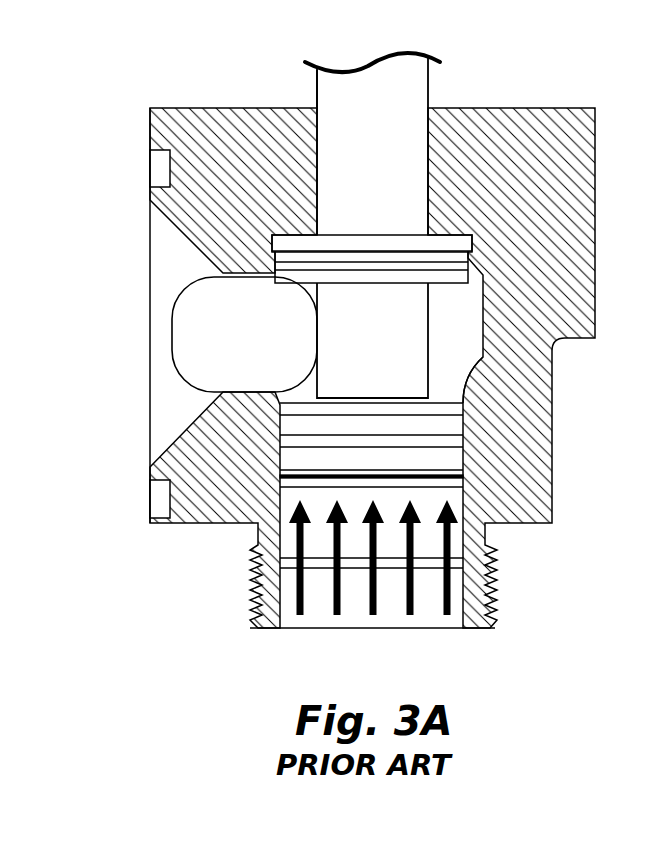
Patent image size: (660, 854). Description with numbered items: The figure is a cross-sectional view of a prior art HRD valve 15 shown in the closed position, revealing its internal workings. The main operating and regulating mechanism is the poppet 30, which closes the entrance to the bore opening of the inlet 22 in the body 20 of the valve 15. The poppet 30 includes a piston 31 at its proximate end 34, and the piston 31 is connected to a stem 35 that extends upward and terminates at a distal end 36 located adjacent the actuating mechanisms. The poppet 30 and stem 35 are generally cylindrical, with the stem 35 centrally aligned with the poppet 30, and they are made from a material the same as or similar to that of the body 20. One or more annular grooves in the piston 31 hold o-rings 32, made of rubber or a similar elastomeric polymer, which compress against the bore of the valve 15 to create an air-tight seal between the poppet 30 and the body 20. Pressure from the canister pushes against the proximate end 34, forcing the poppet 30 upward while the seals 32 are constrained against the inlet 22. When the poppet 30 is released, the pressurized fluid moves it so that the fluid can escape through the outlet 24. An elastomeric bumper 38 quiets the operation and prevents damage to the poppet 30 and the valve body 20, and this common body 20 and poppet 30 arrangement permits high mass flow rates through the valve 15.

The valve 15 is at (567, 120).
The body 20 is at (192, 118).
The inlet 22 is at (426, 630).
The outlet 24 is at (150, 410).
The poppet 30 is at (428, 78).
The piston 31 is at (400, 462).
The o-rings 32 is at (400, 442).
The proximate end 34 is at (430, 398).
The stem 35 is at (318, 78).
The distal end 36 is at (370, 75).
The elastomeric bumper 38 is at (270, 240).